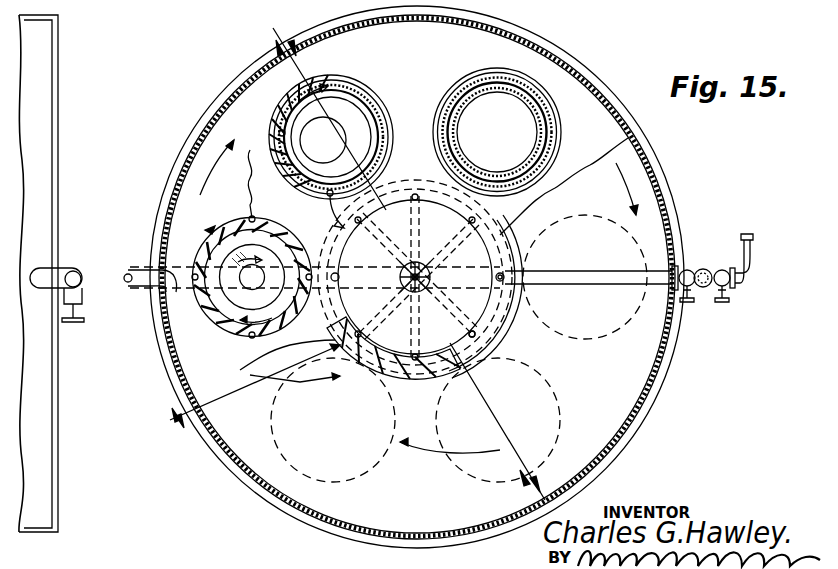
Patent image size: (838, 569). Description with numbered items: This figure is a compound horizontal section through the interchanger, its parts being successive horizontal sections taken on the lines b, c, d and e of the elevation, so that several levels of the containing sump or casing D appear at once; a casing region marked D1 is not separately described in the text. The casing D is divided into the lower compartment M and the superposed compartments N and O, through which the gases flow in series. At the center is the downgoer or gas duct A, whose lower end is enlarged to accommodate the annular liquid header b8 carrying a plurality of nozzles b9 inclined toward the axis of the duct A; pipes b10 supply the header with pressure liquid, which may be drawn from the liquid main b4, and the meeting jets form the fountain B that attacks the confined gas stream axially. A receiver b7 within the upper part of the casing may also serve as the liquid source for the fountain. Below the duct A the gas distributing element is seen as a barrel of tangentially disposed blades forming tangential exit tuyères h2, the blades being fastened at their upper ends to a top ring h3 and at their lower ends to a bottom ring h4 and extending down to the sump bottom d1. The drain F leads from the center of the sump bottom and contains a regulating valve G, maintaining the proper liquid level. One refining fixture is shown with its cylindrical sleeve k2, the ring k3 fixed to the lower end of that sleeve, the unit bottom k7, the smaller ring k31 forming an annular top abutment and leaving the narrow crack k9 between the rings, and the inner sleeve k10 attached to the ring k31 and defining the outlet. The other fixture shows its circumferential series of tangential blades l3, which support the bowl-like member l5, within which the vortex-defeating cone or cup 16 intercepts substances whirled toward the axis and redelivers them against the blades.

The containing sump or casing D is at (450, 22).
The section line c— c is at (540, 25).
The section line b— b is at (206, 129).
The section line e— e is at (330, 540).
The section line d— d is at (651, 397).
The sump bottom d1 is at (598, 412).
The casing chamber D' D1 is at (601, 367).
The lower compartment M is at (467, 500).
The regulating valve G is at (90, 262).
The drain F is at (394, 340).
The downgoer or gas duct A is at (362, 196).
The fountain B is at (415, 277).
The compartment N is at (564, 185).
The compartment O is at (217, 170).
The receiver b7 is at (255, 386).
The annular liquid header b8 is at (512, 325).
The nozzles b9 is at (472, 330).
The pipes b10 is at (622, 278).
The liquid main b4 is at (712, 262).
The bowl-like member l5 is at (252, 267).
The tangential blades l3 is at (278, 140).
The vortex-defeating cone or cup 16 is at (252, 277).
The cylindrical sleeve k2 is at (350, 138).
The opening or crack k9 is at (331, 137).
The inner sleeve k10 is at (331, 137).
The smaller ring k31 is at (375, 135).
The ring k3 is at (520, 78).
The unit bottom k7 is at (330, 136).
The bottom ring h4 is at (366, 388).
The top ring h3 is at (432, 392).
The tangential exit tuyères h2 is at (464, 360).